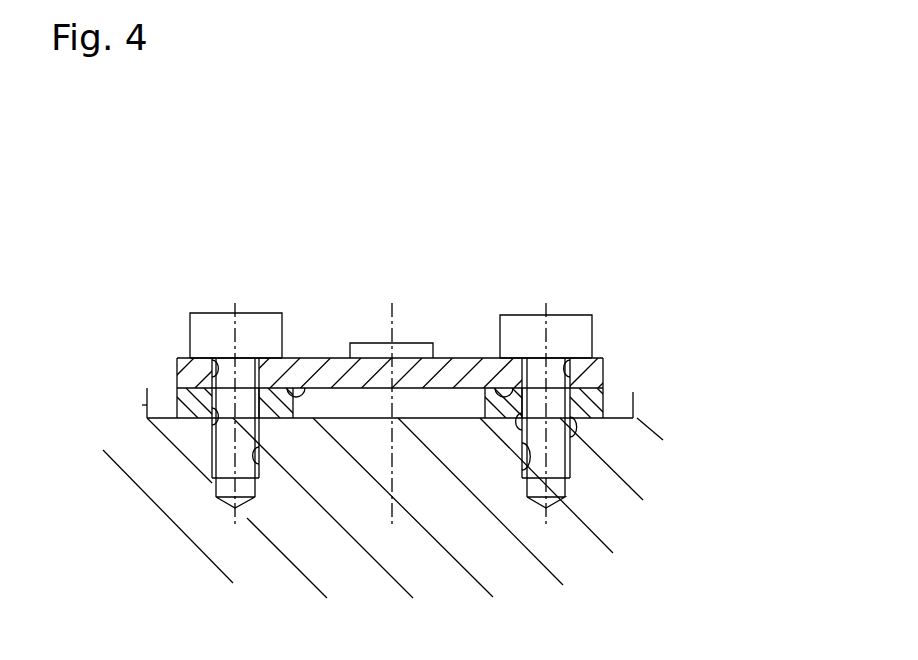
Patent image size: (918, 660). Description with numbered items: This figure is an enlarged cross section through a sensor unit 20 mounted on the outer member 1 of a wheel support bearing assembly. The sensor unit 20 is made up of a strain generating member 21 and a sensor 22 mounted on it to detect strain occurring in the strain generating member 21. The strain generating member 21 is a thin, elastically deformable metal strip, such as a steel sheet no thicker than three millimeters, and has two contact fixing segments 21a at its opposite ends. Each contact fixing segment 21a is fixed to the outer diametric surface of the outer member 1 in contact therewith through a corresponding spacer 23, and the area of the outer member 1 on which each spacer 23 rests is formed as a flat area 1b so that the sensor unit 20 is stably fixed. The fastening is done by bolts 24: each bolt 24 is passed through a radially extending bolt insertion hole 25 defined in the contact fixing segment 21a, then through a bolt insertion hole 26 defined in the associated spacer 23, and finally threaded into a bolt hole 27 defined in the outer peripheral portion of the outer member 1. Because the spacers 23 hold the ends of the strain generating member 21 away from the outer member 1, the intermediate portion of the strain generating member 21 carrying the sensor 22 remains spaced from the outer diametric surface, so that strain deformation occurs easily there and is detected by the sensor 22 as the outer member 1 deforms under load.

The outer member 1 is at (690, 449).
The flat area 1b is at (327, 418).
The sensor unit 20 is at (390, 349).
The strain generating member 21 is at (473, 358).
The contact fixing segment 21a is at (303, 388).
The sensor 22 is at (403, 343).
The spacer 23 is at (175, 403).
The bolt 24 is at (207, 312).
The bolt insertion hole 25 is at (222, 360).
The bolt insertion hole 26 is at (213, 427).
The bolt hole 27 is at (240, 488).